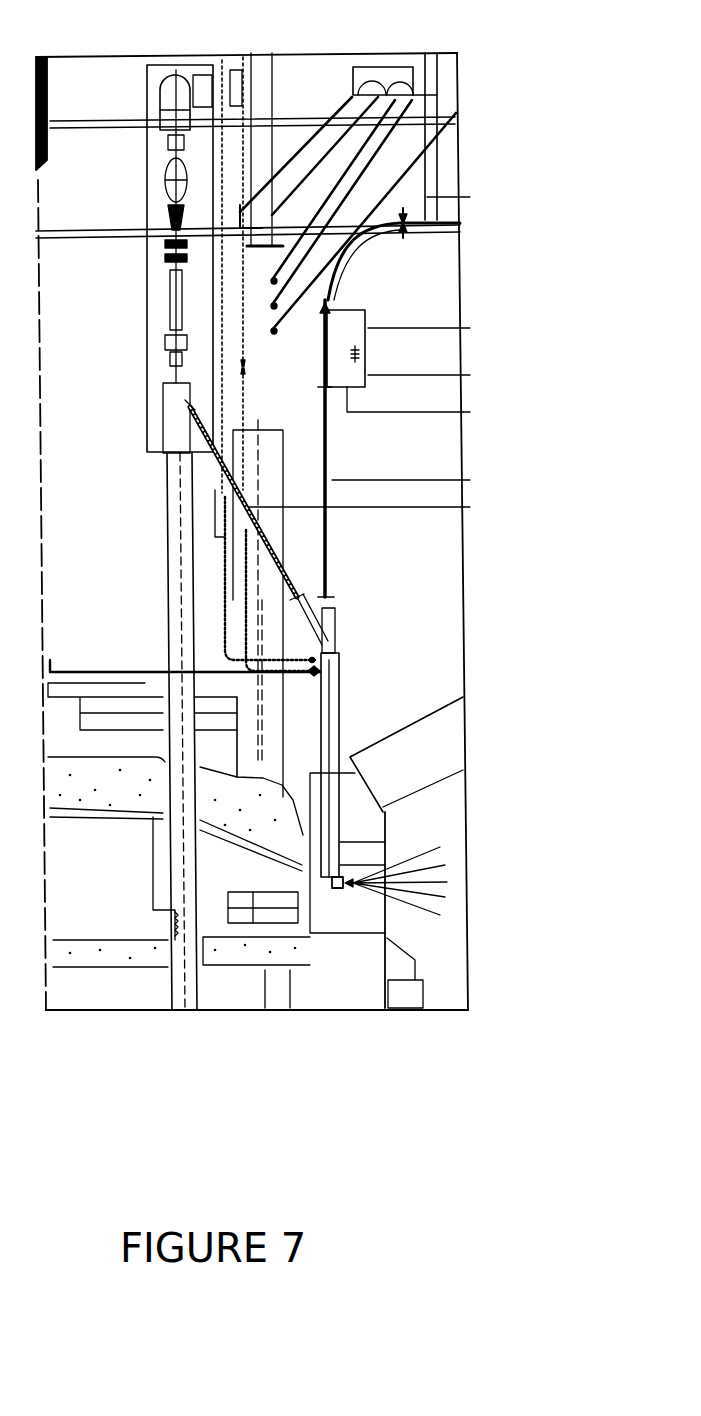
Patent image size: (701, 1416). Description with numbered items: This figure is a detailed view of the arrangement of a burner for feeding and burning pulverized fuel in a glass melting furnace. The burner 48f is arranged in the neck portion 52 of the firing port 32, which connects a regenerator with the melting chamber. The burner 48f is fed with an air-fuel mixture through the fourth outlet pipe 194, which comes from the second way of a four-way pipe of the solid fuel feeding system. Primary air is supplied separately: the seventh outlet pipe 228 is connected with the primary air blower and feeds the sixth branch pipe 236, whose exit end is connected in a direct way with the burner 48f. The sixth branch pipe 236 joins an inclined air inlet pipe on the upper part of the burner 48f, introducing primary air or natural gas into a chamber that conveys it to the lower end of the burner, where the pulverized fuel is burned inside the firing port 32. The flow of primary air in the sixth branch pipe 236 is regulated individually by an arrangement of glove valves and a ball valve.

The seventh outlet pipe 228 is at (180, 78).
The sixth branch pipe 236 is at (267, 543).
The fourth outlet pipe 194 is at (327, 563).
The burner 48f is at (340, 830).
The firing port 32 is at (97, 905).
The neck portion 52 is at (337, 905).